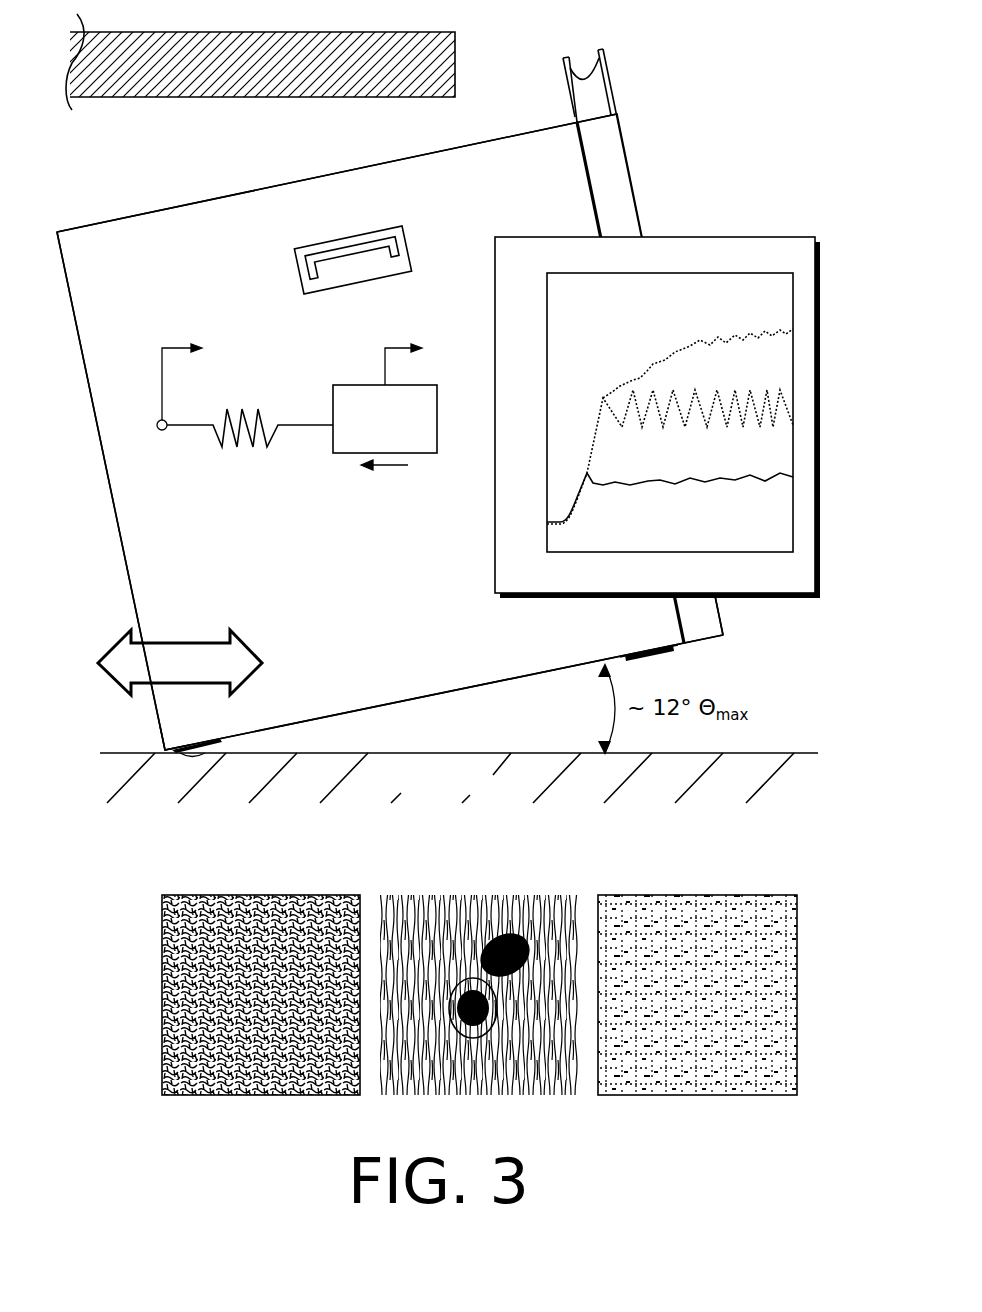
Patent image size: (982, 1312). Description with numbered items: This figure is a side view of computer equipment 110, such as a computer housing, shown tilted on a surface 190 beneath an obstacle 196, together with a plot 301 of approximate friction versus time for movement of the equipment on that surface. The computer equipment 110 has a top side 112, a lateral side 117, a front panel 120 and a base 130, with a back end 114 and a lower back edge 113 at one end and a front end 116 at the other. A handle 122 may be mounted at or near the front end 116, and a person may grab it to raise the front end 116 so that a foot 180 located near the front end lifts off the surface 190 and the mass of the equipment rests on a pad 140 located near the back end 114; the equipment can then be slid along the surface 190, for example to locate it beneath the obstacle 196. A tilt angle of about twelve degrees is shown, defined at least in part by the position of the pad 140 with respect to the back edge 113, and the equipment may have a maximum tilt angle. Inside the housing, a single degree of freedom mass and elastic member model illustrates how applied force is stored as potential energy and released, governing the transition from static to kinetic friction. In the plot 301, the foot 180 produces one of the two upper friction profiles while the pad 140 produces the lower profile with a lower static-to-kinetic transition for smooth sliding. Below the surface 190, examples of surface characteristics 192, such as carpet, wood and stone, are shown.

The computer equipment 110 is at (204, 152).
The top side 112 is at (366, 167).
The lower back edge 113 is at (163, 749).
The back end 114 is at (130, 586).
The front end 116 is at (596, 214).
The lateral side 117 is at (174, 265).
The front panel 120 is at (627, 160).
The handle 122 is at (568, 88).
The base 130 is at (448, 690).
The pad 140 is at (672, 478).
The foot 180 is at (695, 392).
The surface 190 is at (464, 791).
The surface characteristics 192 is at (418, 752).
The obstacle 196 is at (281, 73).
The plot 301 is at (549, 268).